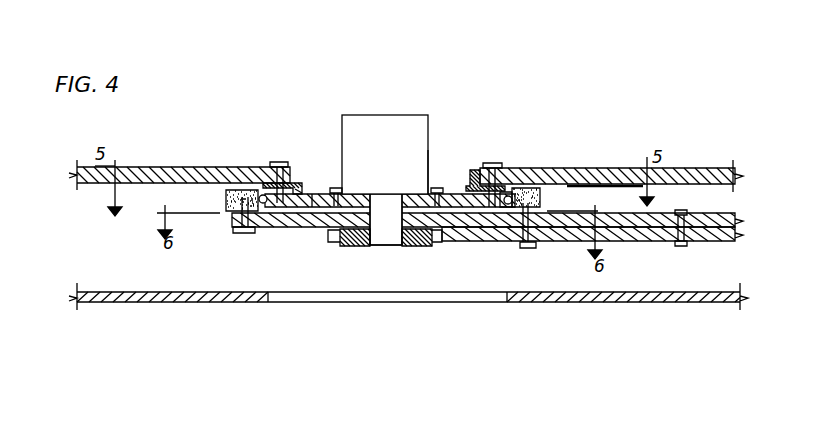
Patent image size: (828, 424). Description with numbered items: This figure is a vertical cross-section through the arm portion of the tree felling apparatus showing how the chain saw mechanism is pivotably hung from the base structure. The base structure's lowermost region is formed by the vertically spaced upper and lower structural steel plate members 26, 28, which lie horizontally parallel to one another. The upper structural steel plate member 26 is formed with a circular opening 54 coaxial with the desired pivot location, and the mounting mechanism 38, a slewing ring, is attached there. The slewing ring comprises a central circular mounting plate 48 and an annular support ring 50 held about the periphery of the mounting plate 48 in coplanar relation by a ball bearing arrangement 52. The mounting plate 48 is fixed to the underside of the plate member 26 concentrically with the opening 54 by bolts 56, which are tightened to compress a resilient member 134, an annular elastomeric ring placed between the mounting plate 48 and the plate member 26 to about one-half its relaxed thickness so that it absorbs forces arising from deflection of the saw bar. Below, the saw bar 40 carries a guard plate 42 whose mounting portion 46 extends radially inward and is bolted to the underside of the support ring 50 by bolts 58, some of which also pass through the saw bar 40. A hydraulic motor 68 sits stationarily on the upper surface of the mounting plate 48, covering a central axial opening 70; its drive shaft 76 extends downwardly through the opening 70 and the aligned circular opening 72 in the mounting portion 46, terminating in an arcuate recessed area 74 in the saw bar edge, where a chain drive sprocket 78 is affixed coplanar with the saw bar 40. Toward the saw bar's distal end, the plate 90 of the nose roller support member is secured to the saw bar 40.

The upper structural steel plate member 26 is at (682, 168).
The lower structural steel plate member 28 is at (717, 292).
The mounting mechanism 38 is at (327, 147).
The saw bar 40 is at (607, 241).
The guard plate 42 is at (610, 214).
The mounting portion 46 is at (305, 226).
The mounting plate 48 is at (312, 194).
The annular support ring 50 is at (540, 195).
The ball bearing arrangement 52 is at (512, 197).
The circular opening 54 is at (475, 173).
The bolts 56 is at (276, 162).
The bolts 58 is at (241, 233).
The hydraulic motor 68 is at (388, 115).
The central axial opening 70 is at (410, 200).
The circular opening 72 is at (364, 220).
The arcuate recessed area 74 is at (430, 245).
The drive shaft 76 is at (390, 247).
The chain drive sprocket 78 is at (358, 247).
The plate 90 is at (507, 300).
The resilient member 134 is at (298, 185).